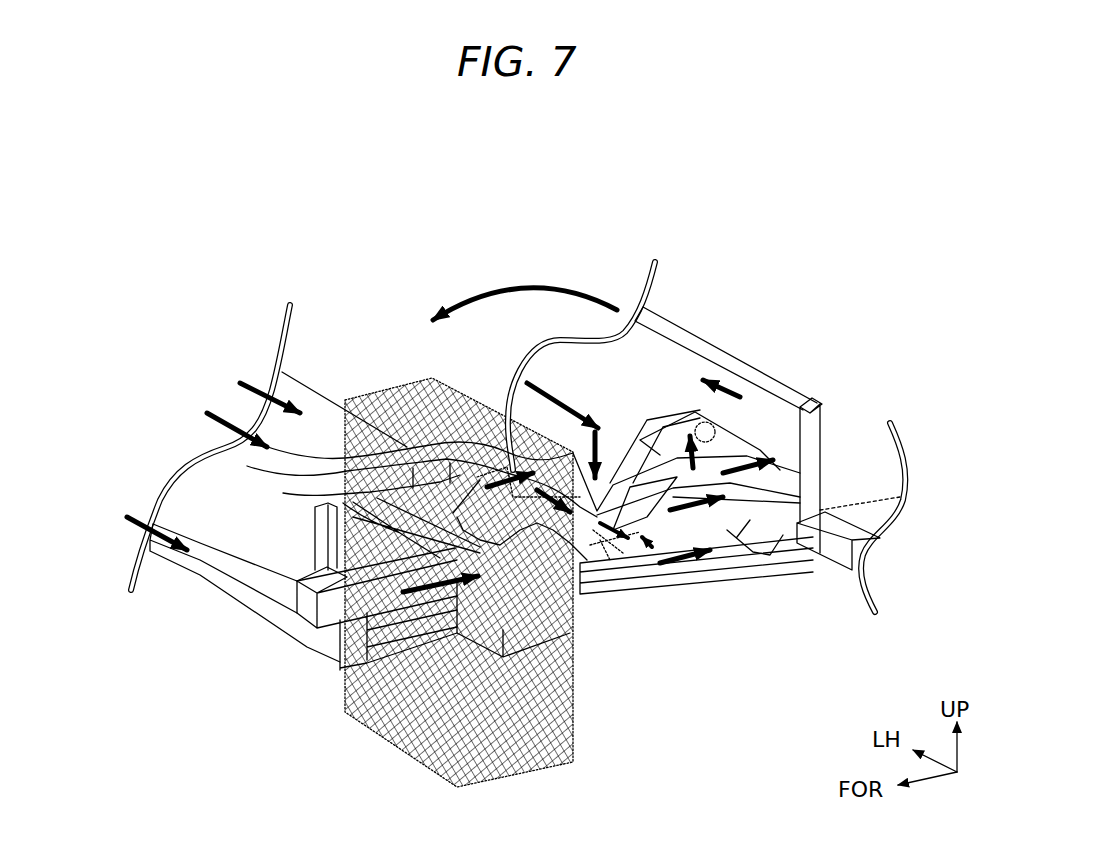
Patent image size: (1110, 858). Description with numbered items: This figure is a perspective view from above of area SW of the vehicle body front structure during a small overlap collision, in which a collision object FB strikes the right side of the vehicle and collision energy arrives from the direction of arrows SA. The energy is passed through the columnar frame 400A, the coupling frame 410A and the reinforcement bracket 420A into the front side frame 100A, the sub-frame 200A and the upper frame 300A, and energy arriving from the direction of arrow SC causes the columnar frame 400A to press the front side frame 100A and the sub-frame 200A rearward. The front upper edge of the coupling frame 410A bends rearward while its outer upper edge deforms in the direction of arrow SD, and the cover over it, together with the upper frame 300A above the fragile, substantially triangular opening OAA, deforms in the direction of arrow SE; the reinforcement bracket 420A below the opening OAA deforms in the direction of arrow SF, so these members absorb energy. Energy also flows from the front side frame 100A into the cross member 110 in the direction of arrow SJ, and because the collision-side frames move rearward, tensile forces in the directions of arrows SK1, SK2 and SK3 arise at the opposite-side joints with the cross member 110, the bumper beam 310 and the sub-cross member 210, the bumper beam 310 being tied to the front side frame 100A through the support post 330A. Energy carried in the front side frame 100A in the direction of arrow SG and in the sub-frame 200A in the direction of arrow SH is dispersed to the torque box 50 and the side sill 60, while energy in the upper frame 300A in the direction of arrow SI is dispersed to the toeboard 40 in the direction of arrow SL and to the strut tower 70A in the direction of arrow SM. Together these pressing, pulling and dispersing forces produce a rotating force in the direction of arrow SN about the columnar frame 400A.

The toeboard 40 is at (667, 330).
The torque box 50 is at (830, 507).
The side sill 60 is at (870, 513).
The strut tower 70A is at (805, 400).
The cross member 110 is at (293, 400).
The sub-cross member 210 is at (223, 567).
The bumper beam 310 is at (293, 462).
The support post 330A is at (323, 520).
The front side frame 100A is at (325, 625).
The sub-frame 200A is at (705, 575).
The upper frame 300A is at (660, 468).
The columnar frame 400A is at (533, 603).
The coupling frame 410A is at (495, 507).
The reinforcement bracket 420A is at (600, 538).
The collision object FB is at (458, 760).
The opening OAA is at (672, 580).
The arrow SA is at (445, 585).
The arrow SC is at (538, 426).
The arrow SD is at (580, 592).
The arrow SE is at (597, 450).
The arrow SF is at (612, 545).
The arrow SG is at (703, 510).
The arrow SH is at (683, 577).
The arrow SI is at (773, 533).
The arrow SJ is at (353, 500).
The arrow SL is at (697, 420).
The arrow SM is at (728, 455).
The arrow SN is at (530, 287).
The arrow SK1 is at (243, 378).
The arrow SK2 is at (232, 440).
The arrow SK3 is at (142, 540).
The area SW is at (923, 187).